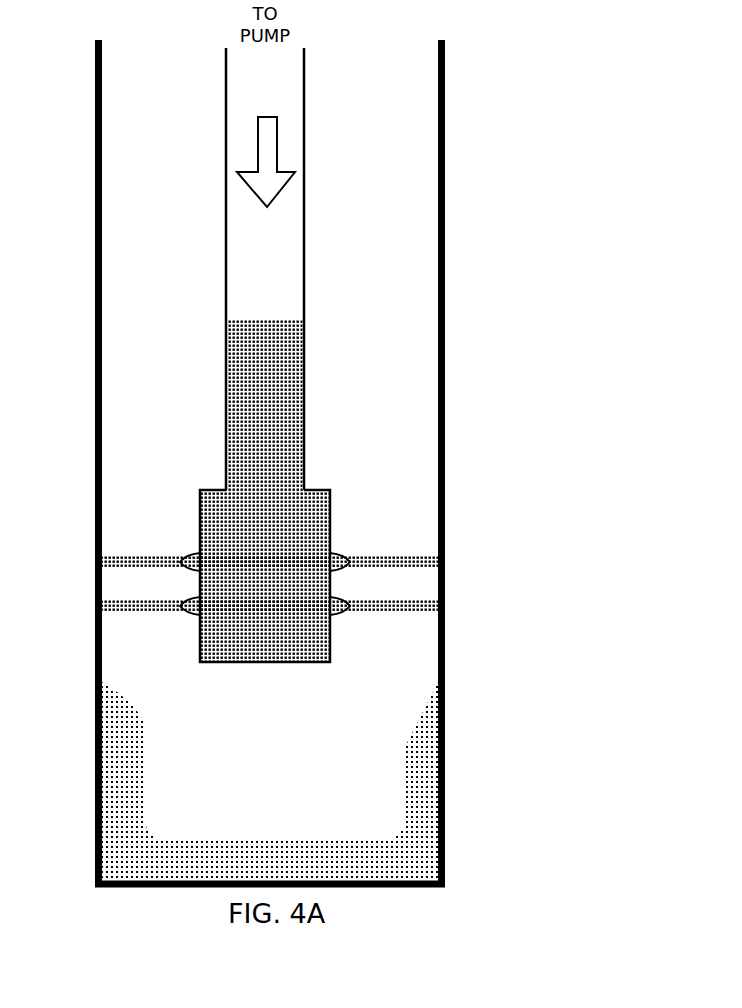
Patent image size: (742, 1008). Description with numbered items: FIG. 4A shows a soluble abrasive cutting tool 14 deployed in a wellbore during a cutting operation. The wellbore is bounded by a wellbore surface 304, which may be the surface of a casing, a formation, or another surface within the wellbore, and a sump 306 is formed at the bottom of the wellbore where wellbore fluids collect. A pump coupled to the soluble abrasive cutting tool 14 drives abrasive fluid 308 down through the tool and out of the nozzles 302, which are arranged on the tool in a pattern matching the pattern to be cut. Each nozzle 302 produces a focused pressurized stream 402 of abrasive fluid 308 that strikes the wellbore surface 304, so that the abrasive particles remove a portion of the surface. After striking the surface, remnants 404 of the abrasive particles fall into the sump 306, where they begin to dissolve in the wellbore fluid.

The soluble abrasive cutting tool 14 is at (322, 533).
The nozzles 302 is at (347, 613).
The wellbore surface 304 is at (102, 236).
The sump 306 is at (337, 787).
The abrasive fluid 308 is at (293, 387).
The focused pressurized stream 402 is at (413, 602).
The remnants 404 is at (410, 842).